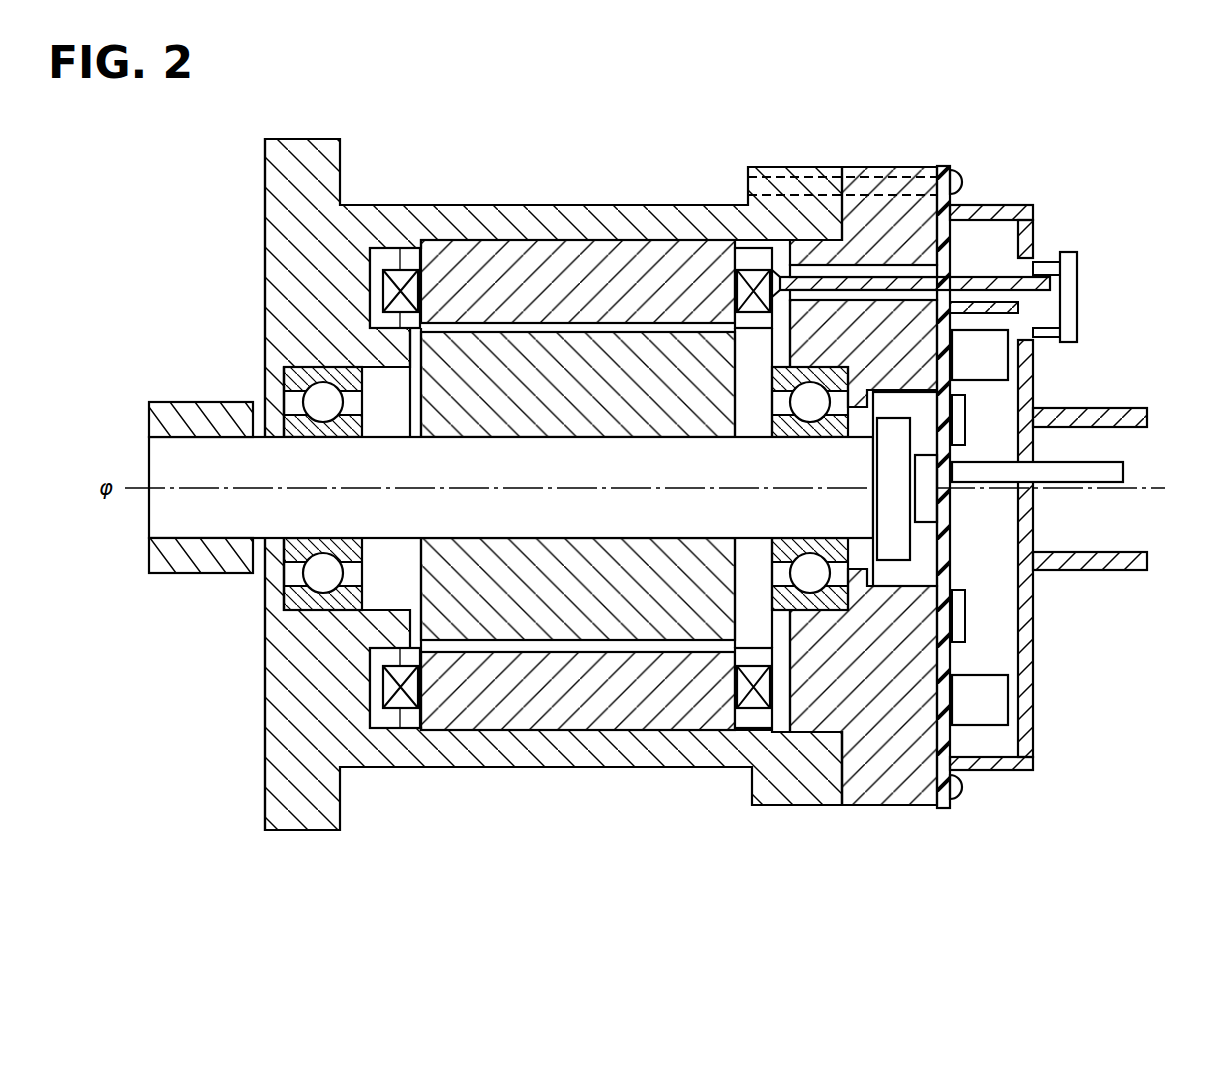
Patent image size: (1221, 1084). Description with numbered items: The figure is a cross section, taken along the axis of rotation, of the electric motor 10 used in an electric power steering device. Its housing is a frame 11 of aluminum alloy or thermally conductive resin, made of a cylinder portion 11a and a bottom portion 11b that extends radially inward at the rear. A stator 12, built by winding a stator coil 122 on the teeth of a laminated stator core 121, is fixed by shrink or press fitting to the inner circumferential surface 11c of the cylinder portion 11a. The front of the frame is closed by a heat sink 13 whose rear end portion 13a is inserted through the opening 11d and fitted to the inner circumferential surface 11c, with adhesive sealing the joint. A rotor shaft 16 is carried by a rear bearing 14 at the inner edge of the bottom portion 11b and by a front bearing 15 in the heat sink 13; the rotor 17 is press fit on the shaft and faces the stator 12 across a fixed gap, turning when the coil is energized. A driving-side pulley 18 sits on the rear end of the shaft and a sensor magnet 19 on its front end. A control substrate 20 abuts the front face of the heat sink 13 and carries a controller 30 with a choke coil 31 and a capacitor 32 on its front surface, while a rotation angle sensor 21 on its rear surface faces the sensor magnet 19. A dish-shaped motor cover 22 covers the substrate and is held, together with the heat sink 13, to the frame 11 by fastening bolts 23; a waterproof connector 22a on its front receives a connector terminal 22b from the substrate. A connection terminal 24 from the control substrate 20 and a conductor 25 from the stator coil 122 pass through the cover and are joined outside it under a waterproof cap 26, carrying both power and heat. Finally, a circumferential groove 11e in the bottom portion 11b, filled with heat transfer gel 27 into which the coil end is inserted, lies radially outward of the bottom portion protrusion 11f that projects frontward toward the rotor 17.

The electric motor 10 is at (606, 133).
The frame 11 is at (653, 212).
The cylinder portion 11a is at (568, 212).
The bottom portion 11b is at (265, 243).
The inner circumferential surface 11c is at (545, 718).
The opening 11d is at (817, 713).
The circumferential groove 11e is at (397, 248).
The bottom portion protrusion 11f is at (287, 374).
The stator 12 is at (629, 725).
The stator core 121 is at (488, 243).
The stator coil 122 is at (403, 703).
The heat sink 13 is at (877, 175).
The rear end portion 13a is at (808, 245).
The rear bearing 14 is at (309, 612).
The front bearing 15 is at (810, 608).
The rotor shaft 16 is at (152, 468).
The rotor 17 is at (388, 346).
The driving-side pulley 18 is at (152, 555).
The sensor magnet 19 is at (898, 546).
The control substrate 20 is at (953, 748).
The rotation angle sensor 21 is at (923, 470).
The motor cover 22 is at (1033, 665).
The waterproof connector 22a is at (1125, 563).
The connector terminal 22b is at (1107, 475).
The fastening bolt 23 is at (960, 185).
The connection terminal 24 is at (1065, 322).
The conductor 25 is at (992, 278).
The waterproof cap 26 is at (1077, 268).
The heat transfer gel 27 is at (373, 667).
The controller 30 is at (1003, 578).
The choke coil 31 is at (997, 705).
The capacitor 32 is at (997, 353).